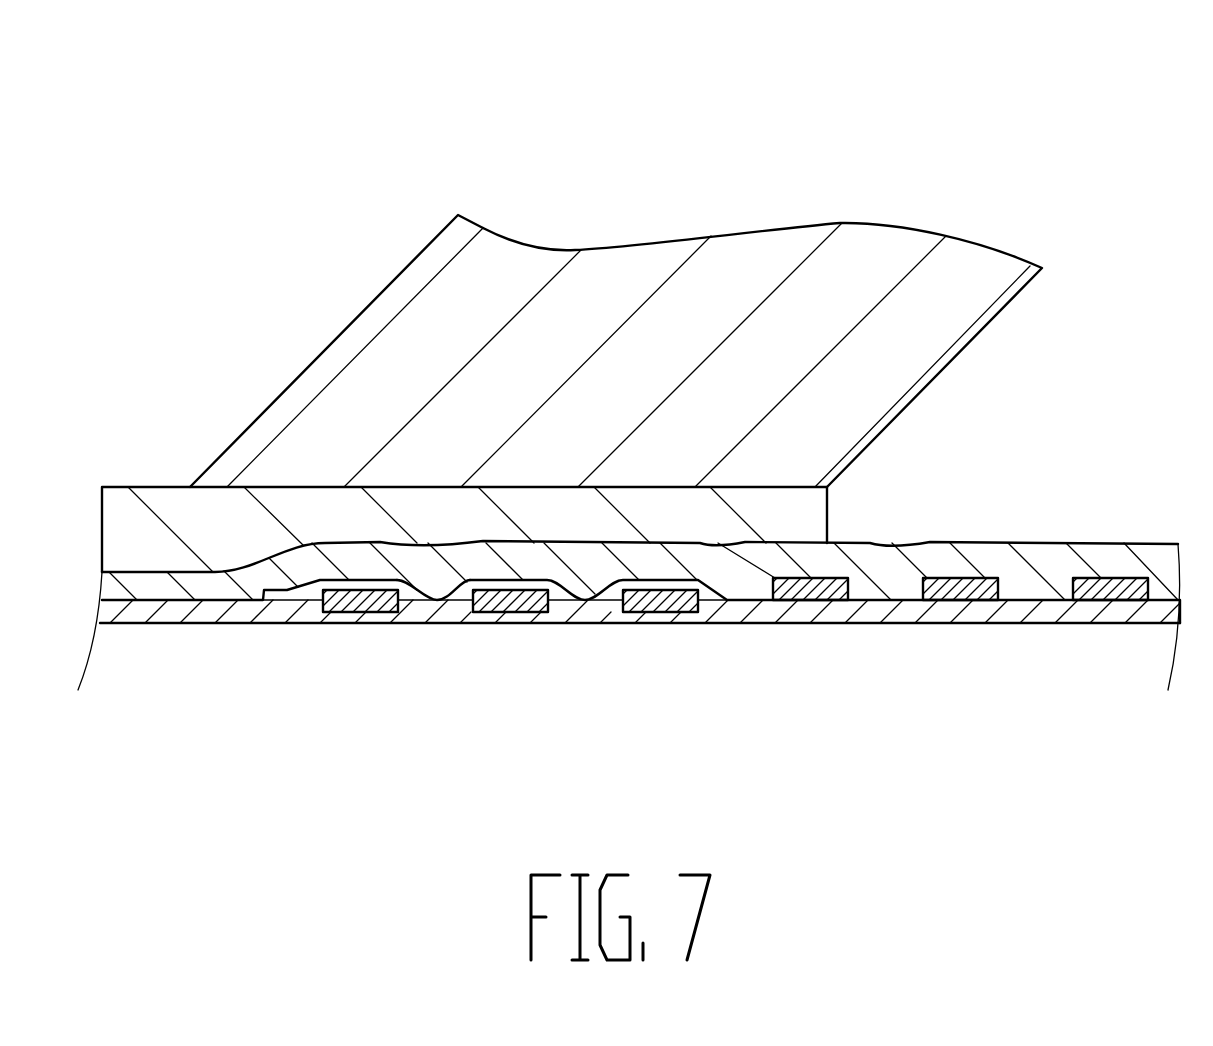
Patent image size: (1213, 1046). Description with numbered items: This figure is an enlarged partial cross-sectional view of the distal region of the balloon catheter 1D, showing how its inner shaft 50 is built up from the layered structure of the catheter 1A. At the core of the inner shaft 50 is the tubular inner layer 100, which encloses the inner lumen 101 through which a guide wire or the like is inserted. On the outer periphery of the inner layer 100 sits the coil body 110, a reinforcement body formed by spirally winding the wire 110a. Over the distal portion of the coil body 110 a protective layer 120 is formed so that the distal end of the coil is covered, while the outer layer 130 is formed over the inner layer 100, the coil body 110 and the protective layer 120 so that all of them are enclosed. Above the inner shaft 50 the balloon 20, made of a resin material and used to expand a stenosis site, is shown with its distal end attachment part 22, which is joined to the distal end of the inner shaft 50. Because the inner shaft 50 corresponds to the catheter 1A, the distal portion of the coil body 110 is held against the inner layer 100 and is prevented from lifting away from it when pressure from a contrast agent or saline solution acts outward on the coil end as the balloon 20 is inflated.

The balloon catheter 1D is at (1055, 163).
The balloon 20 is at (368, 307).
The distal end attachment part 22 is at (214, 460).
The inner shaft 50 is at (1107, 427).
The catheter 1A is at (629, 645).
The inner layer 100 is at (797, 623).
The inner lumen 101 is at (928, 625).
The coil body 110 is at (657, 618).
The wire 110a is at (1108, 593).
The protective layer 120 is at (450, 597).
The outer layer 130 is at (1023, 575).